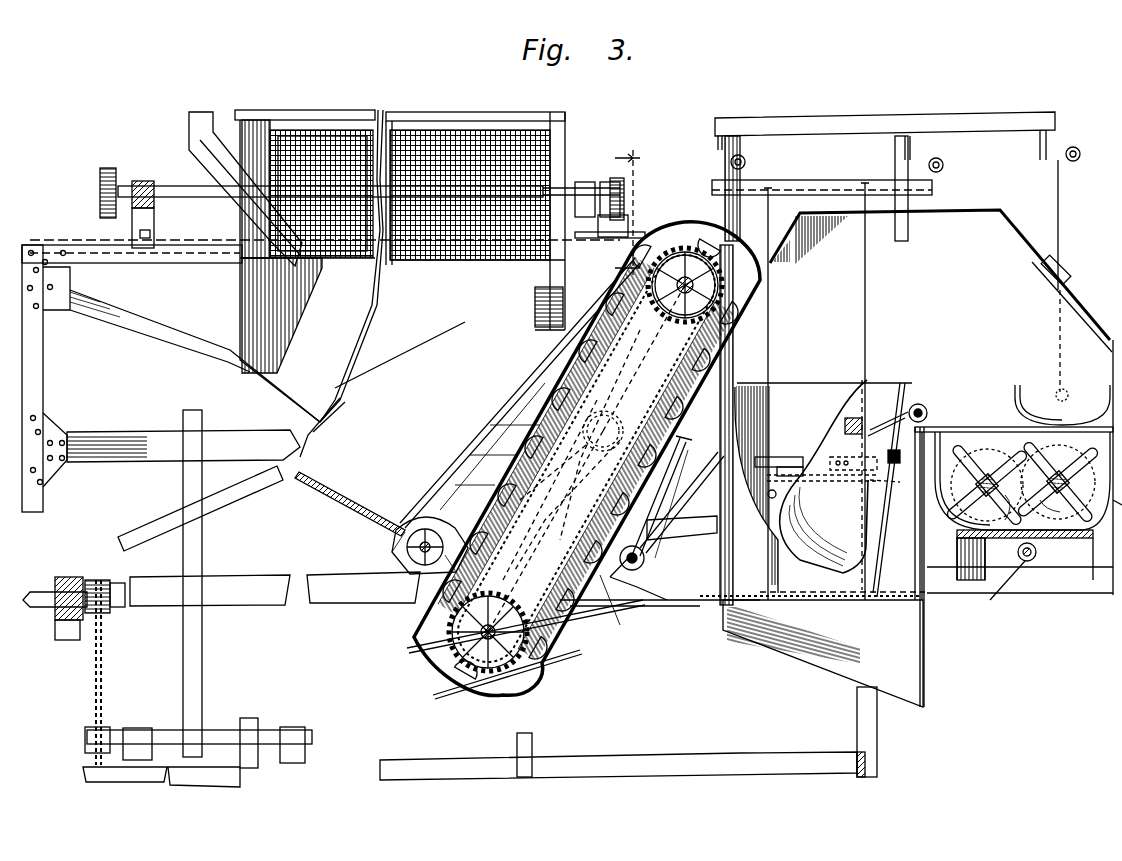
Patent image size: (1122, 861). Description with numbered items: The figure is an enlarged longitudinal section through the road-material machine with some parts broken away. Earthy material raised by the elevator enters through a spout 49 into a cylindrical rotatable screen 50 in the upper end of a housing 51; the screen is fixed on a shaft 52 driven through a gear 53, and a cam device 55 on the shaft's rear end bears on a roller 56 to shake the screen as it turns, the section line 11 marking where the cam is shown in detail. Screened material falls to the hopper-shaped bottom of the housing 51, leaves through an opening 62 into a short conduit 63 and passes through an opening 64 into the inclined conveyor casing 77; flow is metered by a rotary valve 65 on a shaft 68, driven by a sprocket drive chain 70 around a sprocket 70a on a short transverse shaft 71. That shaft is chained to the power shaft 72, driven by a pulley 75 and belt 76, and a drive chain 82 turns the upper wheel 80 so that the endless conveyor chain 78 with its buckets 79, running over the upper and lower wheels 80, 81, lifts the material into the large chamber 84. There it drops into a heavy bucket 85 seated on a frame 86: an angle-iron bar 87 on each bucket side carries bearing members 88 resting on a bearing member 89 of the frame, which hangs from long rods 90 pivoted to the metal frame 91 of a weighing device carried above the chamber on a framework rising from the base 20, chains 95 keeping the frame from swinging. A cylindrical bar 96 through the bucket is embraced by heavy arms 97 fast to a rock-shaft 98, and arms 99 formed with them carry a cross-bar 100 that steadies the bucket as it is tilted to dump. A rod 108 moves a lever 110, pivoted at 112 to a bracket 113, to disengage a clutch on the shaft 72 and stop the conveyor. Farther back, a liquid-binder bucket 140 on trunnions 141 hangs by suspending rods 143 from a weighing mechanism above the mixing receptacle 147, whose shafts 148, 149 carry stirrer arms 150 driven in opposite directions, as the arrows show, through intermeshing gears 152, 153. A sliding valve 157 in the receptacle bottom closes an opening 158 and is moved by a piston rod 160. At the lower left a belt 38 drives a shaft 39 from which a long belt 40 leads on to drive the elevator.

The section line 11 is at (628, 209).
The base 20 is at (705, 765).
The belt 38 is at (238, 770).
The shaft 39 is at (215, 728).
The long belt 40 is at (203, 677).
The spout 49 is at (200, 114).
The rotatable screen 50 is at (405, 130).
The housing 51 is at (465, 125).
The shaft 52 is at (192, 184).
The gear 53 is at (112, 170).
The cam device 55 is at (626, 187).
The roller 56 is at (630, 222).
The opening 62 is at (392, 525).
The short conduit 63 is at (400, 545).
The opening 64 is at (470, 548).
The rotary valve 65 is at (400, 568).
The shaft 68 is at (400, 603).
The sprocket drive chain 70 is at (515, 465).
The sprocket 70a is at (620, 420).
The short transverse shaft 71 is at (595, 435).
The power shaft 72 is at (607, 612).
The pulley 75 is at (672, 545).
The belt 76 is at (640, 610).
The conveyor casing 77 is at (505, 690).
The endless conveyor chain 78 is at (600, 518).
The buckets 79 is at (425, 690).
The upper wheel 80 is at (678, 320).
The lower wheel 81 is at (528, 602).
The drive chain 82 is at (655, 380).
The chamber 84 is at (1002, 210).
The bucket 85 is at (745, 380).
The frame 86 is at (900, 580).
The bar 87 is at (790, 456).
The bearing members 88 is at (785, 470).
The bearing member 89 is at (805, 495).
The long rods 90 is at (770, 367).
The metal frame 91 is at (805, 183).
The chains 95 is at (925, 610).
The cylindrical bar 96 is at (843, 424).
The heavy arms 97 is at (912, 404).
The rock-shaft 98 is at (928, 410).
The arm 99 is at (903, 443).
The cross-bar 100 is at (892, 482).
The rod 108 is at (671, 496).
The arm or lever 110 is at (680, 504).
The pivot 112 is at (605, 610).
The bracket 113 is at (640, 615).
The bucket 140 is at (1032, 383).
The trunnion 141 is at (1068, 390).
The suspending rods 143 is at (1062, 255).
The receptacle 147 is at (1113, 516).
The shaft 148 is at (1050, 470).
The shaft 149 is at (987, 473).
The stirrer arms 150 is at (995, 460).
The gear 152 is at (1025, 516).
The gear 153 is at (955, 430).
The sliding valve 157 is at (1000, 545).
The opening 158 is at (1045, 565).
The piston rod 160 is at (1001, 592).